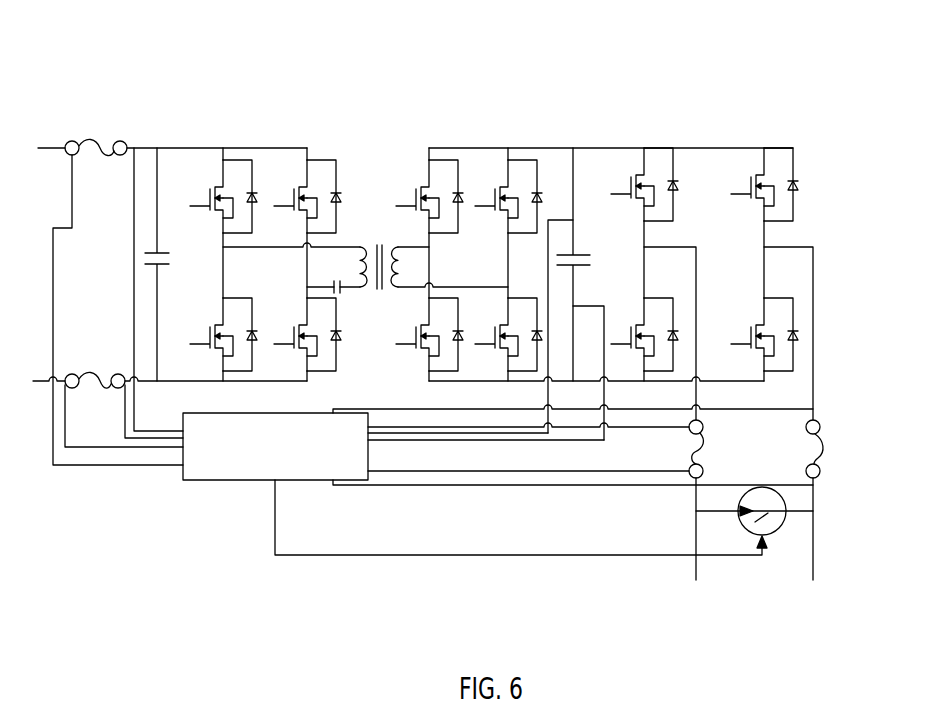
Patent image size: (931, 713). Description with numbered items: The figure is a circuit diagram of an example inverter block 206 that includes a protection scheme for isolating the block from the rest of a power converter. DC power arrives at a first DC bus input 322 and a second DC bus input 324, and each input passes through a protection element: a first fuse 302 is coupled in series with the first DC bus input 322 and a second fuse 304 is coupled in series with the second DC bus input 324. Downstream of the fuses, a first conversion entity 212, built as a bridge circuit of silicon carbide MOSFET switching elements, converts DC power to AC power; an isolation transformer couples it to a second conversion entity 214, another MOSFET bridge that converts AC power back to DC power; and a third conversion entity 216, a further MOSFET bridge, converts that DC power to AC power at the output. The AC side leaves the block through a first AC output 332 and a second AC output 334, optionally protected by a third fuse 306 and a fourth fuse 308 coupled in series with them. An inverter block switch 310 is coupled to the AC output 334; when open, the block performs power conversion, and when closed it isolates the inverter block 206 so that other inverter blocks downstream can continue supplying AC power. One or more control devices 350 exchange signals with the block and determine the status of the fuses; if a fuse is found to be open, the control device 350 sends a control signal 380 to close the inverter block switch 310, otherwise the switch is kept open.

The inverter block 206 is at (598, 70).
The first conversion entity 212 is at (306, 137).
The second conversion entity 214 is at (418, 137).
The third conversion entity 216 is at (793, 137).
The first fuse 302 is at (96, 146).
The second fuse 304 is at (88, 372).
The third fuse 306 is at (820, 452).
The fourth fuse 308 is at (703, 446).
The inverter block switch 310 is at (782, 522).
The first DC bus input 322 is at (47, 148).
The second DC bus input 324 is at (47, 383).
The first AC output 332 is at (815, 392).
The second AC output 334 is at (701, 384).
The control device 350 is at (217, 481).
The control signal 380 is at (516, 556).